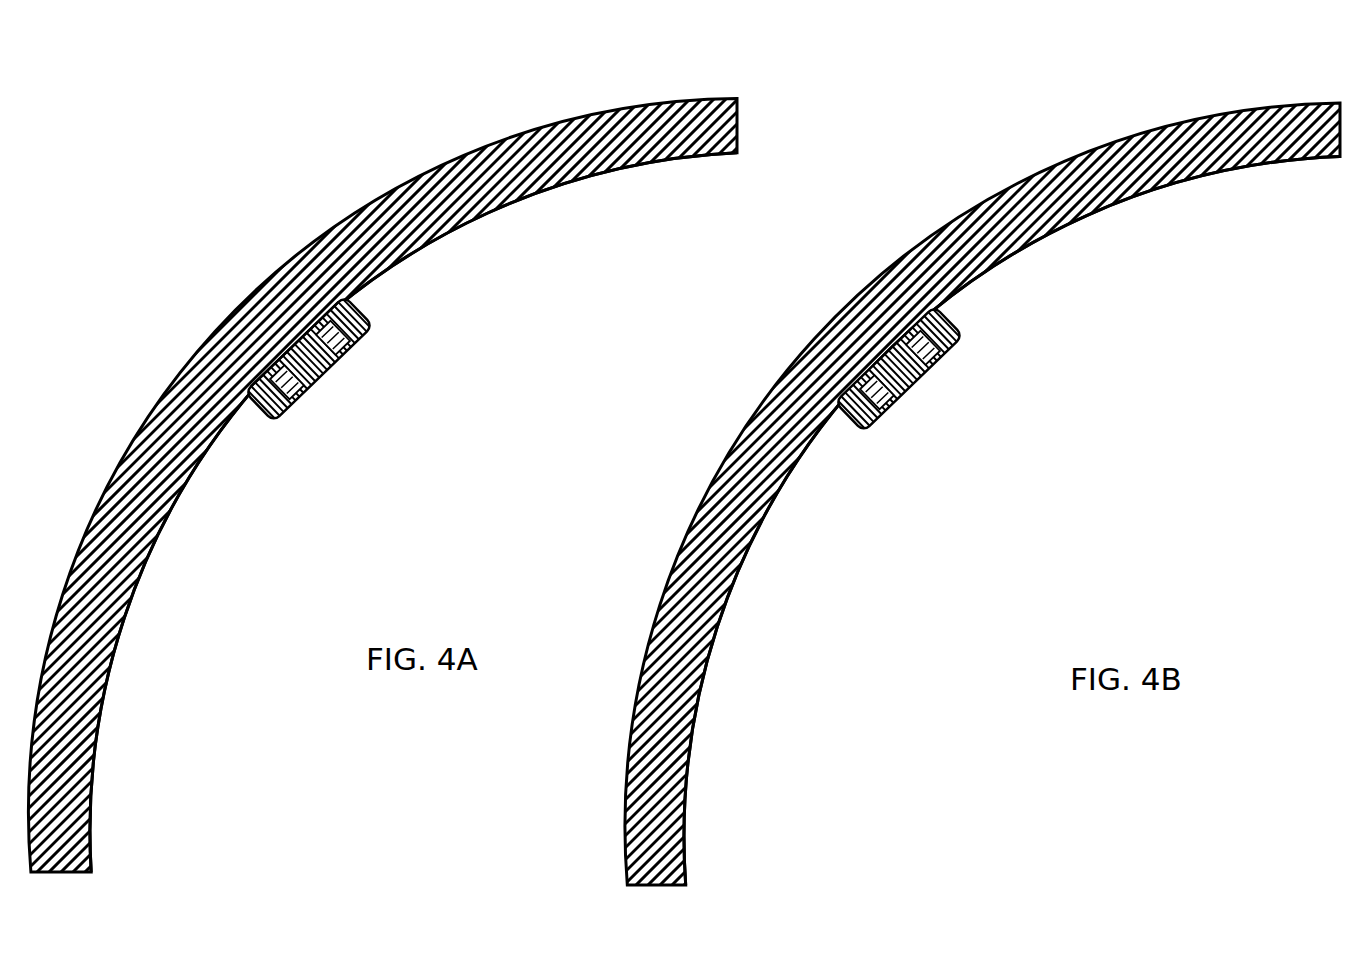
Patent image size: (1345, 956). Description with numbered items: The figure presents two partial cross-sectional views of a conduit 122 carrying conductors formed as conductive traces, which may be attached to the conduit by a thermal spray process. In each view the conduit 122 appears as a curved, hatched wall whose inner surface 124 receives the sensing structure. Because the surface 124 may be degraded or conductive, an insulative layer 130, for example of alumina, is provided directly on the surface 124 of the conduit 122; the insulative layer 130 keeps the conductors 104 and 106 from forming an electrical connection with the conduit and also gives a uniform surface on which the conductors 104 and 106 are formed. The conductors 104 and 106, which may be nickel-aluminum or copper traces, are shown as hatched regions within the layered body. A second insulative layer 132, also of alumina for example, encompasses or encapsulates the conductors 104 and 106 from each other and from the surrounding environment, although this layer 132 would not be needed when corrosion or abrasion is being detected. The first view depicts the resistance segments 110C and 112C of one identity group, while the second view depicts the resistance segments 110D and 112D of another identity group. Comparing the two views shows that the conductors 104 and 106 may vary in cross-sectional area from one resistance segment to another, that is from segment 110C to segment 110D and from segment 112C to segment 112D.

In FIG. 4A, the conduit 122 is at (420, 177).
In FIG. 4B, the conduit 122 is at (1222, 113).
In FIG. 4A, the surface 124 is at (116, 650).
In FIG. 4B, the surface 124 is at (744, 563).
In FIG. 4A, the insulative layer 130 is at (347, 300).
In FIG. 4A, the second insulative layer 132 is at (402, 379).
In FIG. 4A, the conductor 104 is at (410, 383).
In FIG. 4B, the conductor 104 is at (1010, 392).
In FIG. 4A, the conductor 106 is at (324, 452).
In FIG. 4B, the conductor 106 is at (932, 462).
In FIG. 4A, the resistance segment 110C is at (350, 341).
In FIG. 4A, the resistance segment 112C is at (288, 407).
In FIG. 4B, the resistance segment 110D is at (940, 351).
In FIG. 4B, the resistance segment 112D is at (880, 416).